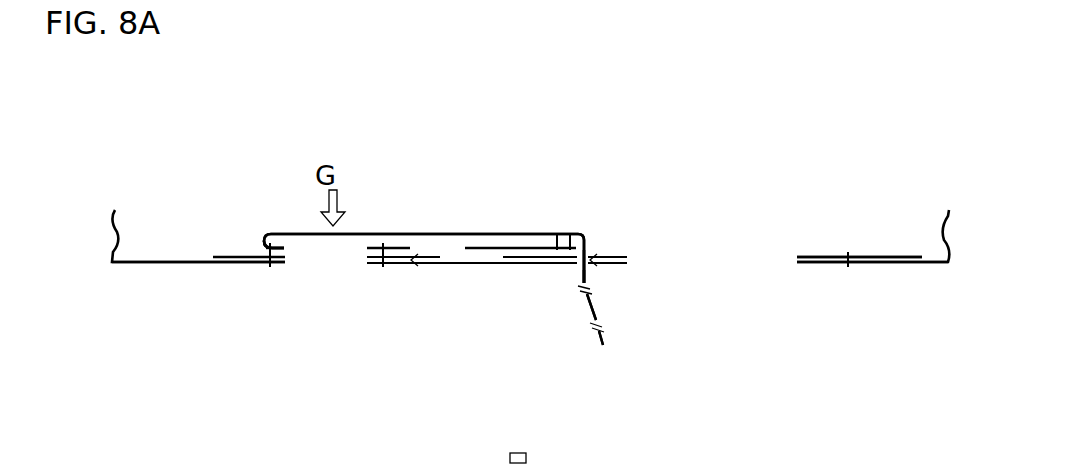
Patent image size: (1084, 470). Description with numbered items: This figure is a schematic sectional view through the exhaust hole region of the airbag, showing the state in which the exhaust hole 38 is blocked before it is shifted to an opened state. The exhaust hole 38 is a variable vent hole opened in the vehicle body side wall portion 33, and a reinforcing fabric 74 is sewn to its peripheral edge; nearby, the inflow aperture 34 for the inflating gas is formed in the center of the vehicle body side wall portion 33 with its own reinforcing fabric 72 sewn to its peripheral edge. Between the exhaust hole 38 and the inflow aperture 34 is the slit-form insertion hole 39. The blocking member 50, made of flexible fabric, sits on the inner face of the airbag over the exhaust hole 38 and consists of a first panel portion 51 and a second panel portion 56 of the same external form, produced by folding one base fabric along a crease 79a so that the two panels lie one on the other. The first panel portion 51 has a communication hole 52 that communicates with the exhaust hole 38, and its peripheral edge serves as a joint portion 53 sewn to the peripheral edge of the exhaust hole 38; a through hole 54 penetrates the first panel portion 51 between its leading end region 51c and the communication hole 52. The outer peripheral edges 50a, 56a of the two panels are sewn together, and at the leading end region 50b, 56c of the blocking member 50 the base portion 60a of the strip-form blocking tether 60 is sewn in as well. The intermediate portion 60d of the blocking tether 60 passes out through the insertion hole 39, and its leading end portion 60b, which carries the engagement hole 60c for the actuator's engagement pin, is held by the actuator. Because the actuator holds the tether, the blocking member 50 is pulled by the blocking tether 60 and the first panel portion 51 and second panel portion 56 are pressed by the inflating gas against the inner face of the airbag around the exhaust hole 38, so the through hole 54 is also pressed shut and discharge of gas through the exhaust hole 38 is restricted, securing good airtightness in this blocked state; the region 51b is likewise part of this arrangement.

The vehicle body side wall portion 33 is at (150, 265).
The reinforcing fabric 74 is at (222, 256).
The reinforcing fabric 72 is at (886, 256).
The inflow aperture 34 is at (733, 260).
The blocking member 50 is at (518, 203).
The second panel portion 56 is at (488, 232).
The first panel portion 51 is at (518, 250).
The leading end region 51c is at (563, 250).
The lower plate left portion 51b is at (257, 263).
The communication hole 52 is at (296, 250).
The exhaust hole 38 is at (353, 263).
The through hole 54 is at (446, 245).
The joint portion 53 is at (384, 232).
The crease 79a is at (258, 232).
The plate left end 50a is at (271, 224).
The outer peripheral edge 56a is at (274, 244).
The leading end region 50b is at (569, 213).
The upper layer right end 56c is at (563, 241).
The base portion 60a is at (582, 232).
The insertion hole 39 is at (591, 276).
The blocking tether 60 is at (607, 307).
The intermediate portion 60d is at (591, 278).
The engagement hole 60c is at (598, 327).
The leading end portion 60b is at (603, 345).